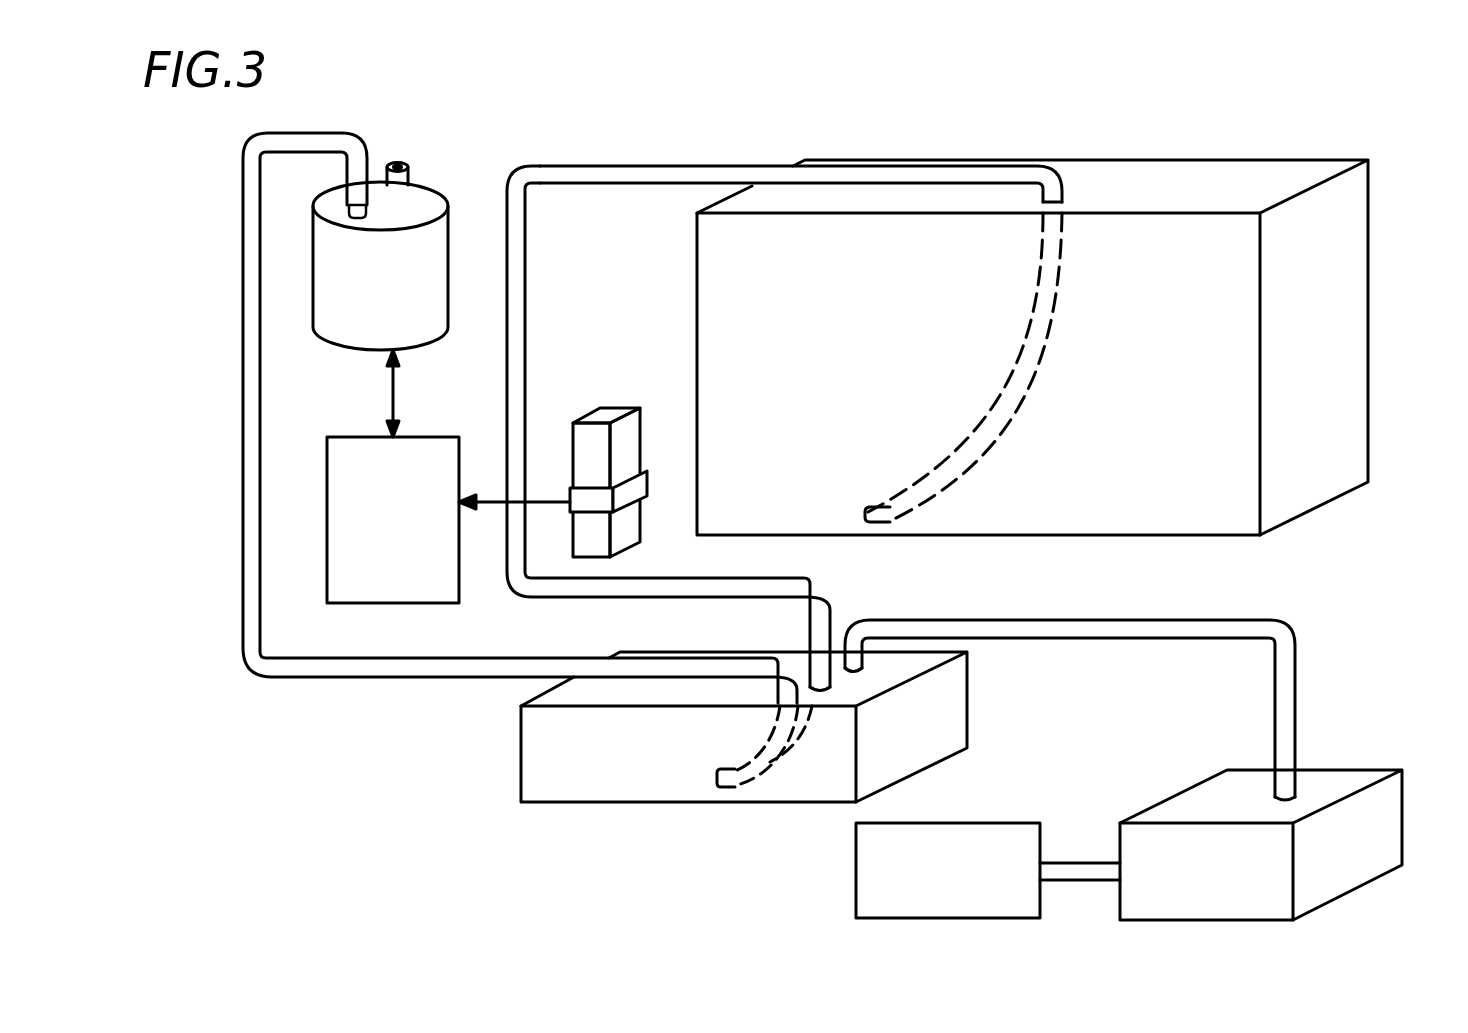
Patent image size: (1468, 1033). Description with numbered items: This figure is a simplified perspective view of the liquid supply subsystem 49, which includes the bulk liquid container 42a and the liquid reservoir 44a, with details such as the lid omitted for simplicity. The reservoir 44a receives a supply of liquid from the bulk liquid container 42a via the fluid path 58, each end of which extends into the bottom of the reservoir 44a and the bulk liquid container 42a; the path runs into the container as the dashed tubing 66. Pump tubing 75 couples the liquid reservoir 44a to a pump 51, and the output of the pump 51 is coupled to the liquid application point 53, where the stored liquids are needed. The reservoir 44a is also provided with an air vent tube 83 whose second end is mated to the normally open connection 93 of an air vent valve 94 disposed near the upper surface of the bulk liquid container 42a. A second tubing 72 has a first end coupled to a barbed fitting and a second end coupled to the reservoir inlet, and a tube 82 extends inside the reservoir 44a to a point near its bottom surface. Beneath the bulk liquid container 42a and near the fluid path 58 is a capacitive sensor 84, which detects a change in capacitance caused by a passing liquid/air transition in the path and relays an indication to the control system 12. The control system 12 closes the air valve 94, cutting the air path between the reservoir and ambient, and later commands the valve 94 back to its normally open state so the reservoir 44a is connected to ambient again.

The control system 12 is at (357, 437).
The bulk liquid container 42a is at (1340, 422).
The liquid reservoir 44a is at (950, 718).
The liquid supply subsystem 49 is at (418, 737).
The pump 51 is at (1402, 840).
The liquid application point 53 is at (990, 822).
The fluid path 58 is at (668, 135).
The tube end in bulk container 66 is at (1018, 388).
The second tubing 72 is at (508, 327).
The pump tubing 75 is at (1215, 628).
The tube 82 is at (727, 790).
The air vent tube 83 is at (250, 510).
The capacitive sensor 84 is at (622, 532).
The normally open connection 93 is at (352, 208).
The air vent valve 94 is at (427, 203).